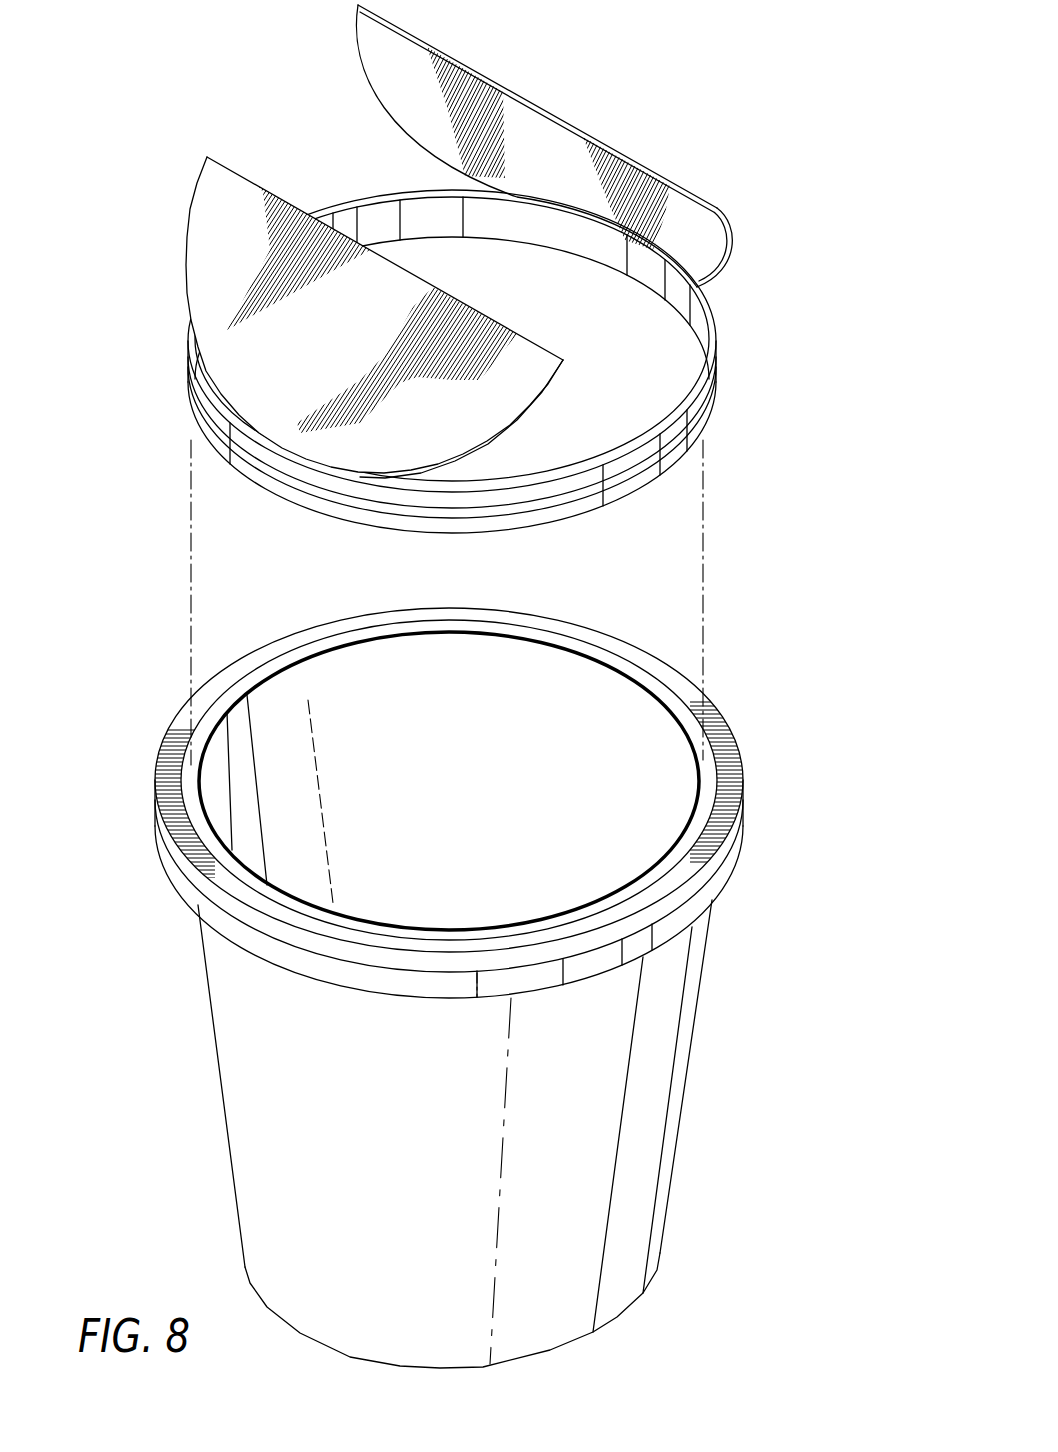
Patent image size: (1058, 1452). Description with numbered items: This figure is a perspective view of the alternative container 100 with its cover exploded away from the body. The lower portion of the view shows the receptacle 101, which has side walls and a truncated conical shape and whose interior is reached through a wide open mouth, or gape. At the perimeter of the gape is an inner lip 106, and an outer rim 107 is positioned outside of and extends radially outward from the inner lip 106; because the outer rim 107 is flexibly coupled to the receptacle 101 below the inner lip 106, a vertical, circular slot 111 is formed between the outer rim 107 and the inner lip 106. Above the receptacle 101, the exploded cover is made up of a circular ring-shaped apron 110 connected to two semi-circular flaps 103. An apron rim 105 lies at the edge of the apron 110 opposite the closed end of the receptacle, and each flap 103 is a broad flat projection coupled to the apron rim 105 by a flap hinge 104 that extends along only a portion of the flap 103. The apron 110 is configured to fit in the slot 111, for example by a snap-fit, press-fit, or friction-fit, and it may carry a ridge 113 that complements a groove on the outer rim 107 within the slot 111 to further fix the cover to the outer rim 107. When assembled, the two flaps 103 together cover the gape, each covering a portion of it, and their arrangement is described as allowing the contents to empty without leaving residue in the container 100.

The container 100 is at (752, 92).
The receptacle 101 is at (688, 1040).
The flaps 103 is at (483, 70).
The flap hinge 104 is at (243, 408).
The apron rim 105 is at (712, 335).
The inner lip 106 is at (338, 647).
The outer rim 107 is at (727, 767).
The apron 110 is at (730, 400).
The slot 111 is at (192, 803).
The ridge 113 is at (437, 513).